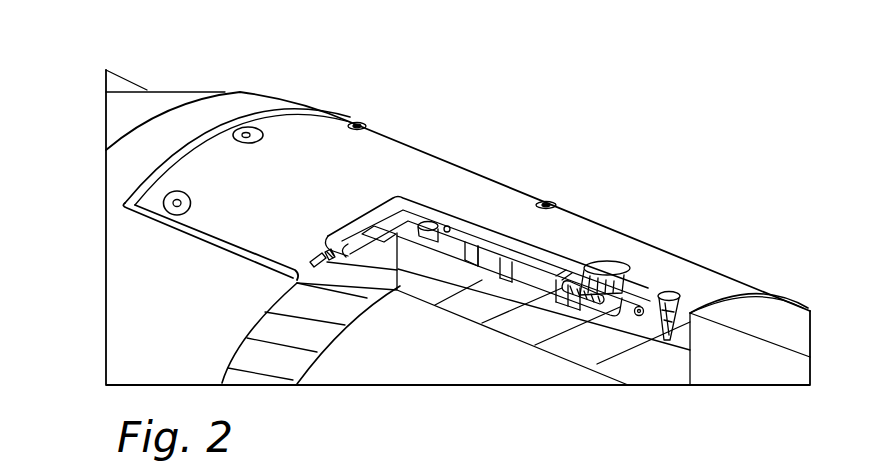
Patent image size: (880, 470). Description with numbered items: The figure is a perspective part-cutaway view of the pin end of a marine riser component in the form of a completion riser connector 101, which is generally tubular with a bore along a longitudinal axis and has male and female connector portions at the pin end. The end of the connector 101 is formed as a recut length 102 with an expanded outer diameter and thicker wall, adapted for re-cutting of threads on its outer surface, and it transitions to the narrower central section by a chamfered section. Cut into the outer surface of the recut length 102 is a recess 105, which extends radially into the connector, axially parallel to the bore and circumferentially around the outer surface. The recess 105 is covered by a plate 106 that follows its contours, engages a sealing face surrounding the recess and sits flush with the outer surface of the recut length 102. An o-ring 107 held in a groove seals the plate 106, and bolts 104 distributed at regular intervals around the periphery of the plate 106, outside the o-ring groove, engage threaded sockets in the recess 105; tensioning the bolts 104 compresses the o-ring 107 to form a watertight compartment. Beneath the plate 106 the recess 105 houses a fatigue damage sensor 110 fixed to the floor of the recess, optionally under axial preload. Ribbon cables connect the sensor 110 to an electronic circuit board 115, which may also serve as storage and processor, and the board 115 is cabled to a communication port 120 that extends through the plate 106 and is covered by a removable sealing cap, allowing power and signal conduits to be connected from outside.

The completion riser connector 101 is at (273, 74).
The recut length 102 is at (273, 108).
The bolts 104 is at (245, 133).
The recess 105 is at (353, 240).
The plate 106 is at (397, 157).
The o-ring 107 is at (638, 316).
The fatigue damage sensor 110 is at (413, 230).
The electronic circuit board 115 is at (527, 263).
The communication port 120 is at (620, 268).